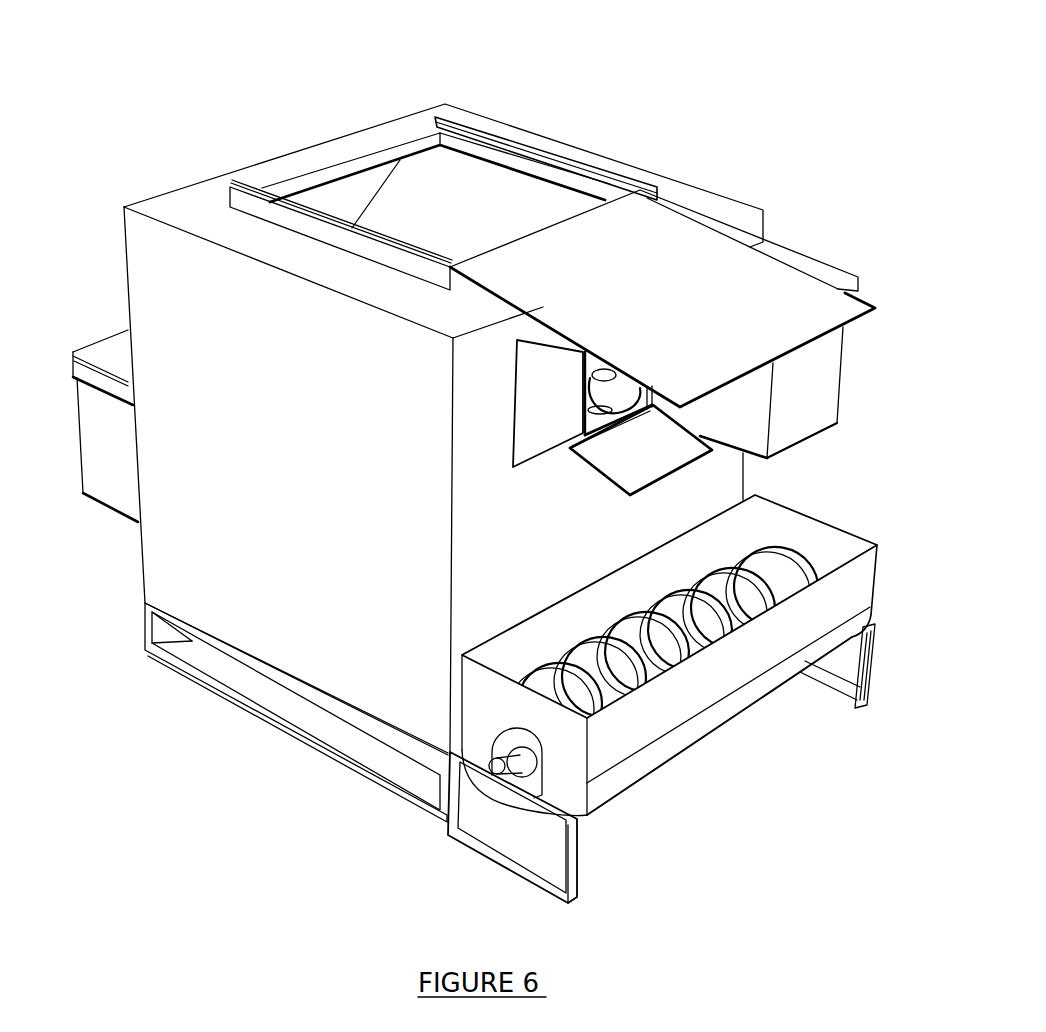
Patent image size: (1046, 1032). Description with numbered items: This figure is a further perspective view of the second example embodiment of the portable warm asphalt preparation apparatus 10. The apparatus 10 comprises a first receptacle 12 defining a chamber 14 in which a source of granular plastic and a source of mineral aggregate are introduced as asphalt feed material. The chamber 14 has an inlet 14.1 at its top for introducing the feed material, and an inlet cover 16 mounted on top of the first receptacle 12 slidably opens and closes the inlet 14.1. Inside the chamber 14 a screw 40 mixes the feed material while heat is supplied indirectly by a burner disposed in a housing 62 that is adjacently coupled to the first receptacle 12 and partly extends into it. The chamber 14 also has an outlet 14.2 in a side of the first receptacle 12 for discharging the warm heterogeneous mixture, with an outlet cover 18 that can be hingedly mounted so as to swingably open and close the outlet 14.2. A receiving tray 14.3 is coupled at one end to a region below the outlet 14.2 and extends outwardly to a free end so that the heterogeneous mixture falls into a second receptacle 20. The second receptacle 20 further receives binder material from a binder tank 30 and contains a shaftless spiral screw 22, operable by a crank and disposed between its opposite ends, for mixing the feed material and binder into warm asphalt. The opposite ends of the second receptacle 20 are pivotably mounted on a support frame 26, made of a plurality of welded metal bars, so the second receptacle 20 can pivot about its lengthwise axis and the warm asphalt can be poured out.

The portable warm asphalt preparation apparatus 10 is at (733, 74).
The first receptacle 12 is at (167, 193).
The chamber 14 is at (451, 222).
The inlet 14.1 is at (505, 190).
The outlet 14.2 is at (586, 422).
The receiving tray 14.3 is at (627, 461).
The inlet cover 16 is at (778, 282).
The outlet cover 18 is at (542, 363).
The second receptacle 20 is at (843, 596).
The shaftless spiral screw 22 is at (762, 550).
The support frame 26 is at (878, 688).
The binder tank 30 is at (823, 402).
The screw 40 is at (626, 388).
The housing 62 is at (108, 443).